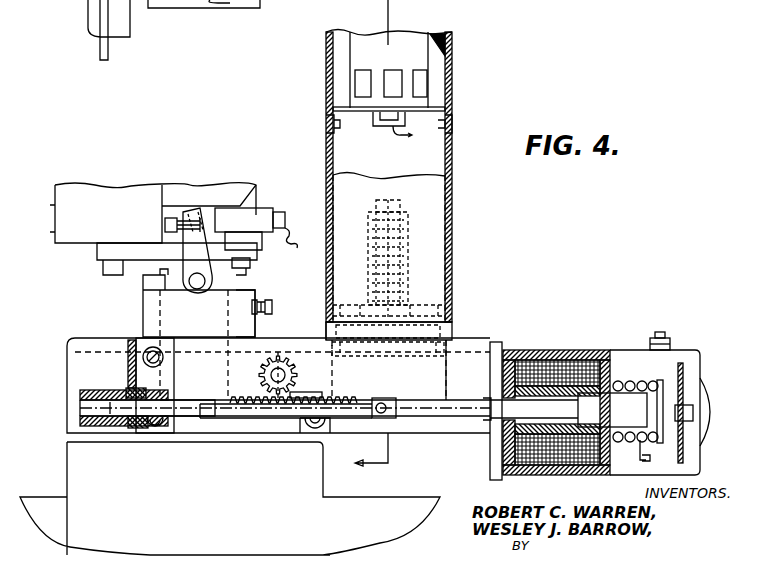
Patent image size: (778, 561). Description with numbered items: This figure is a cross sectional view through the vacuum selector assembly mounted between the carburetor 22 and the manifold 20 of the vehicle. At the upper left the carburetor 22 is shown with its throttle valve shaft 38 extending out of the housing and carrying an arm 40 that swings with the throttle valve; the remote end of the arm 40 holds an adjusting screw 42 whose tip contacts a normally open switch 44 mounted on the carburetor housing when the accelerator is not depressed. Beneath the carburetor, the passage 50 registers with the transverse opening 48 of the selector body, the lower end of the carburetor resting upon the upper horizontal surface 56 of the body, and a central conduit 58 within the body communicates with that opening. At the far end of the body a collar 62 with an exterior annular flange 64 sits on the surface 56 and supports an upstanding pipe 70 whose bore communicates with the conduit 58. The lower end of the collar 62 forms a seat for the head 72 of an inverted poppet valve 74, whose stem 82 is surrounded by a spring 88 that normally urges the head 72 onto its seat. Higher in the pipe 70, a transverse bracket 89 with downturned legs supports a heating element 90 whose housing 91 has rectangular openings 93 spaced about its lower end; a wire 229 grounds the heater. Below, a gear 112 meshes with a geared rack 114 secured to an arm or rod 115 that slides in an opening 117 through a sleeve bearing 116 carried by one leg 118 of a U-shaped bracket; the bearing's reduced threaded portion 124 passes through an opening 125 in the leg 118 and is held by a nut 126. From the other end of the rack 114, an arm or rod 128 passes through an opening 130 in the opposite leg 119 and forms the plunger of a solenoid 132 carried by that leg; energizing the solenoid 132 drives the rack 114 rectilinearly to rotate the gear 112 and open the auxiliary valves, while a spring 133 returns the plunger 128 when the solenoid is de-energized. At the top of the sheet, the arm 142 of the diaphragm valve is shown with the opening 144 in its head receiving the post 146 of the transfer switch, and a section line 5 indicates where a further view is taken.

The section line 5- 5 is at (369, 242).
The manifold 20 is at (67, 470).
The carburetor 22 is at (246, 182).
The throttle valve shaft 38 is at (190, 283).
The arm 40 is at (185, 258).
The adjusting screw 42 is at (165, 228).
The normally open switch 44 is at (294, 200).
The transverse opening 48 is at (265, 355).
The passage 50 is at (248, 328).
The upper horizontal surface 56 is at (324, 322).
The central conduit 58 is at (455, 356).
The collar 62 is at (453, 318).
The annular flange 64 is at (452, 330).
The pipe 70 is at (452, 158).
The head 72 is at (390, 360).
The inverted poppet valve 74 is at (402, 225).
The stem 82 is at (405, 290).
The spring 88 is at (408, 270).
The bracket 89 is at (445, 108).
The heating element 90 is at (438, 52).
The housing 91 is at (430, 36).
The rectangular openings 93 is at (418, 70).
The gear 112 is at (300, 378).
The geared rack 114 is at (300, 420).
The arm or rod 115 is at (186, 404).
The sleeve bearing 116 is at (110, 390).
The opening 117 is at (80, 409).
The leg 118 is at (130, 345).
The leg 119 is at (492, 370).
The reduced threaded portion 124 is at (164, 392).
The opening 125 is at (126, 388).
The nut 126 is at (145, 432).
The arm or rod 128 is at (426, 398).
The opening 130 is at (490, 420).
The solenoid 132 is at (616, 348).
The spring 133 is at (638, 382).
The arm 142 is at (143, 0).
The opening 144 is at (212, 0).
The post 146 is at (252, 0).
The wire 229 is at (400, 137).